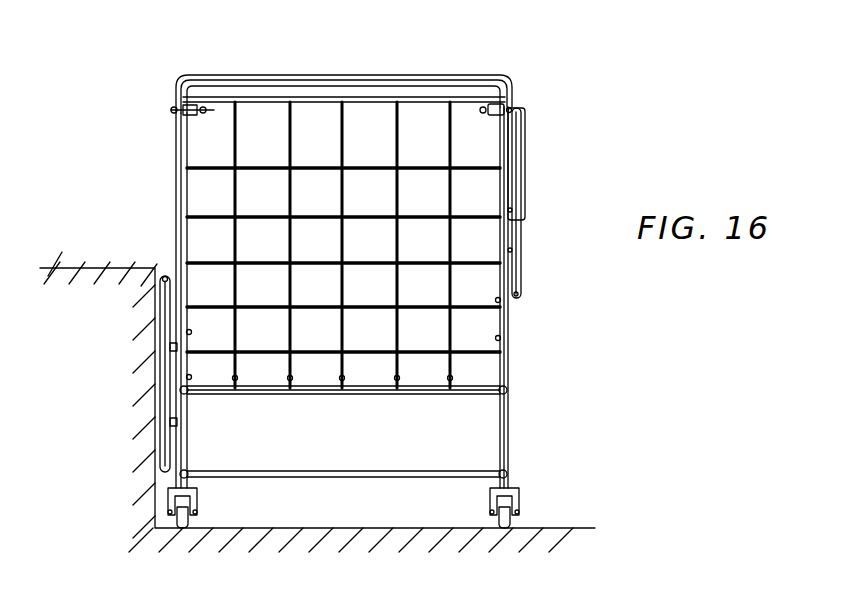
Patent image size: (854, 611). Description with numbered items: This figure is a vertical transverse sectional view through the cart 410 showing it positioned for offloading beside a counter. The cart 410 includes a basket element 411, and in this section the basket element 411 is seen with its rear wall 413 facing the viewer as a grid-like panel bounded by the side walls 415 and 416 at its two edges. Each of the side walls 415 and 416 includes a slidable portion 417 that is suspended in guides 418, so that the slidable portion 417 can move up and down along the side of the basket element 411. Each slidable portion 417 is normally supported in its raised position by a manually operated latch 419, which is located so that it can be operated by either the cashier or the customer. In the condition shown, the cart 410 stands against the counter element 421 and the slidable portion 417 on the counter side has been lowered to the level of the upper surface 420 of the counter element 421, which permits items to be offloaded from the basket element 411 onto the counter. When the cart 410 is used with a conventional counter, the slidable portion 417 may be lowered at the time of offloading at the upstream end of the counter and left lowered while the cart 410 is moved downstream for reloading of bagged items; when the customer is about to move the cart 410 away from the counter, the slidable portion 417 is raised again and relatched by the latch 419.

The cart 410 is at (238, 62).
The basket element 411 is at (399, 129).
The rear wall 413 is at (452, 192).
The side wall 415 is at (186, 329).
The side wall 416 is at (500, 327).
The slidable portion 417 is at (162, 356).
The guides 418 is at (526, 117).
The manually operated latch 419 is at (206, 110).
The upper surface 420 is at (88, 266).
The counter element 421 is at (64, 247).